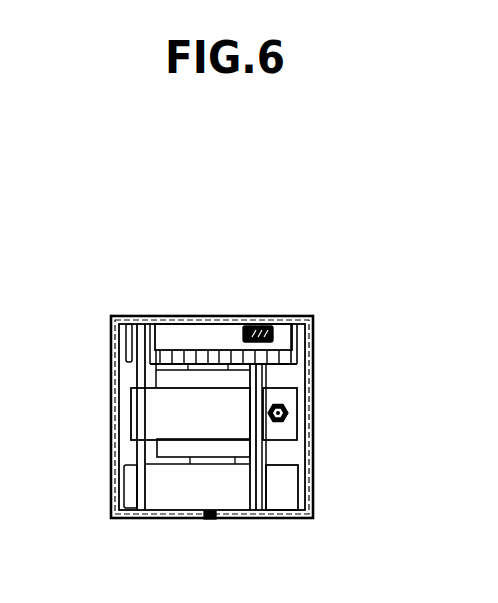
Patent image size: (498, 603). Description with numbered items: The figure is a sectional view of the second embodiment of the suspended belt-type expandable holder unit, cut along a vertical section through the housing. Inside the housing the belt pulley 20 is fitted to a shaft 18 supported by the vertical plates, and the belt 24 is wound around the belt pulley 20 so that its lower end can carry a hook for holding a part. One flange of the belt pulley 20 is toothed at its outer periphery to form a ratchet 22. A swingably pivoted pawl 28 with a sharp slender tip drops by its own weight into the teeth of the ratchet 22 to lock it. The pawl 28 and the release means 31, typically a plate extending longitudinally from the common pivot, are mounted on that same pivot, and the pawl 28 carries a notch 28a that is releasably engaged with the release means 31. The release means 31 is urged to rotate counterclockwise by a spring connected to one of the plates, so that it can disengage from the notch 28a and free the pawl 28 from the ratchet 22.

The shaft 18 is at (208, 520).
The belt pulley 20 is at (127, 480).
The ratchet 22 is at (127, 364).
The belt 24 is at (168, 379).
The pawl 28 is at (192, 338).
The notch 28a is at (297, 339).
The release means 31 is at (272, 326).